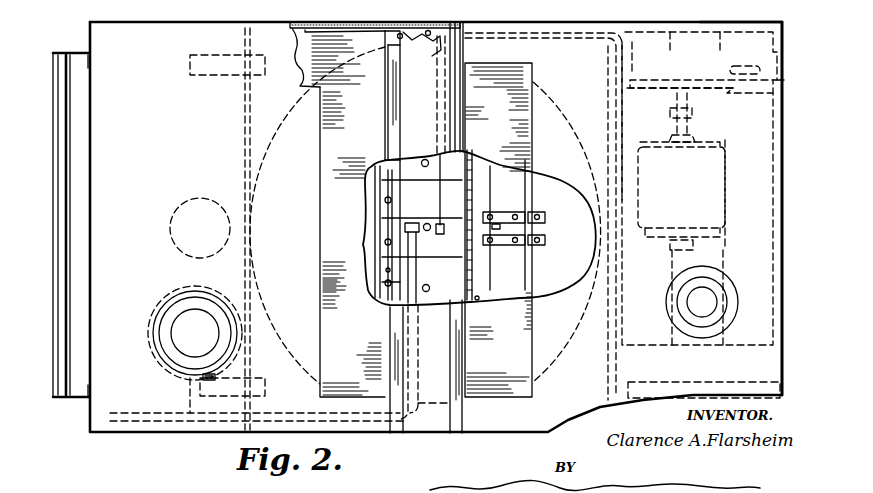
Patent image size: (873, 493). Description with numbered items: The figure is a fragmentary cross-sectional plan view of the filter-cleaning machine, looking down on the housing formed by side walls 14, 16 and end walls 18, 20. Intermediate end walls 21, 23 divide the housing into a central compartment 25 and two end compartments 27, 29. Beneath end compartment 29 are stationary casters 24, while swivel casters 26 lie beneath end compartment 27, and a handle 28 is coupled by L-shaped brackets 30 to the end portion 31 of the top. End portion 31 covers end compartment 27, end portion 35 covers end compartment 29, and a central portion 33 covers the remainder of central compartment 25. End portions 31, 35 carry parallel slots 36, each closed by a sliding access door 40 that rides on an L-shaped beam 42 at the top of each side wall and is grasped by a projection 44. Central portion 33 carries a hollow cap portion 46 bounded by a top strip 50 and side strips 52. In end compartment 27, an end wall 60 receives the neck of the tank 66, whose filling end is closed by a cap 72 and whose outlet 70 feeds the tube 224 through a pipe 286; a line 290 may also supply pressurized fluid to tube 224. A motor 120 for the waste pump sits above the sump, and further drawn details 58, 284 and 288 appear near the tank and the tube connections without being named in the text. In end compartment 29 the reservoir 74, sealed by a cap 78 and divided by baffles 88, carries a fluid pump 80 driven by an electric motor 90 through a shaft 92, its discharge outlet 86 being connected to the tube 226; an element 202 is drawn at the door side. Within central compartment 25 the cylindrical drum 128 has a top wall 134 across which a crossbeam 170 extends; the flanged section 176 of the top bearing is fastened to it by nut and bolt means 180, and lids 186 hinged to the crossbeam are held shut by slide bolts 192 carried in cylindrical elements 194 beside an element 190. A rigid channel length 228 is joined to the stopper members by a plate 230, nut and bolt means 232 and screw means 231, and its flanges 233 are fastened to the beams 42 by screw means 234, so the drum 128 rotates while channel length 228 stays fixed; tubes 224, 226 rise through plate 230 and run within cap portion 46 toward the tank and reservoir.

The side wall 14 is at (315, 23).
The side wall 16 is at (382, 436).
The end wall 18 is at (90, 132).
The end wall 20 is at (783, 182).
The intermediate end wall 21 is at (243, 128).
The intermediate end wall 23 is at (622, 150).
The stationary casters 24 is at (787, 386).
The central compartment 25 is at (277, 117).
The swivel casters 26 is at (200, 58).
The end compartment 27 is at (128, 147).
The handle 28 is at (68, 258).
The end compartment 29 is at (667, 361).
The L-shaped brackets 30 is at (74, 52).
The end portion 31 is at (127, 31).
The central portion 33 is at (461, 24).
The end portion 35 is at (744, 23).
The slots 36 is at (540, 76).
The access door 40 is at (304, 85).
The L-shaped beam 42 is at (292, 28).
The projection 44 is at (392, 118).
The hollow cap portion 46 is at (409, 127).
The top strip 50 is at (412, 86).
The side strips 52 is at (393, 99).
The ring 58 is at (222, 296).
The end wall 60 is at (178, 300).
The tank 66 is at (150, 322).
The outlet 70 is at (198, 379).
The cap 72 is at (210, 335).
The reservoir 74 is at (760, 284).
The cap 78 is at (705, 298).
The fluid pump 80 is at (730, 92).
The discharge outlet 86 is at (748, 66).
The baffles 88 is at (725, 248).
The electric motor 90 is at (722, 200).
The shaft 92 is at (688, 125).
The motor 120 is at (195, 200).
The cylindrical drum 128 is at (559, 350).
The top wall 134 is at (545, 183).
The crossbeam 170 is at (472, 285).
The flanged section 176 is at (370, 248).
The nut and bolt means 180 is at (373, 200).
The lids 186 is at (535, 290).
The terminal block 190 is at (541, 218).
The slide bolt 192 is at (490, 220).
The hollow cylindrical element 194 is at (505, 214).
The hinge 202 is at (785, 92).
The tube 224 is at (416, 275).
The tube 226 is at (448, 166).
The channel length 228 is at (429, 46).
The plate 230 is at (468, 308).
The screw means 231 is at (425, 160).
The nut and bolt means 232 is at (437, 222).
The flanges 233 is at (395, 270).
The screw means 234 is at (388, 44).
The bracket 284 is at (400, 222).
The pipe 286 is at (190, 408).
The fitting 288 is at (440, 230).
The line 290 is at (120, 412).